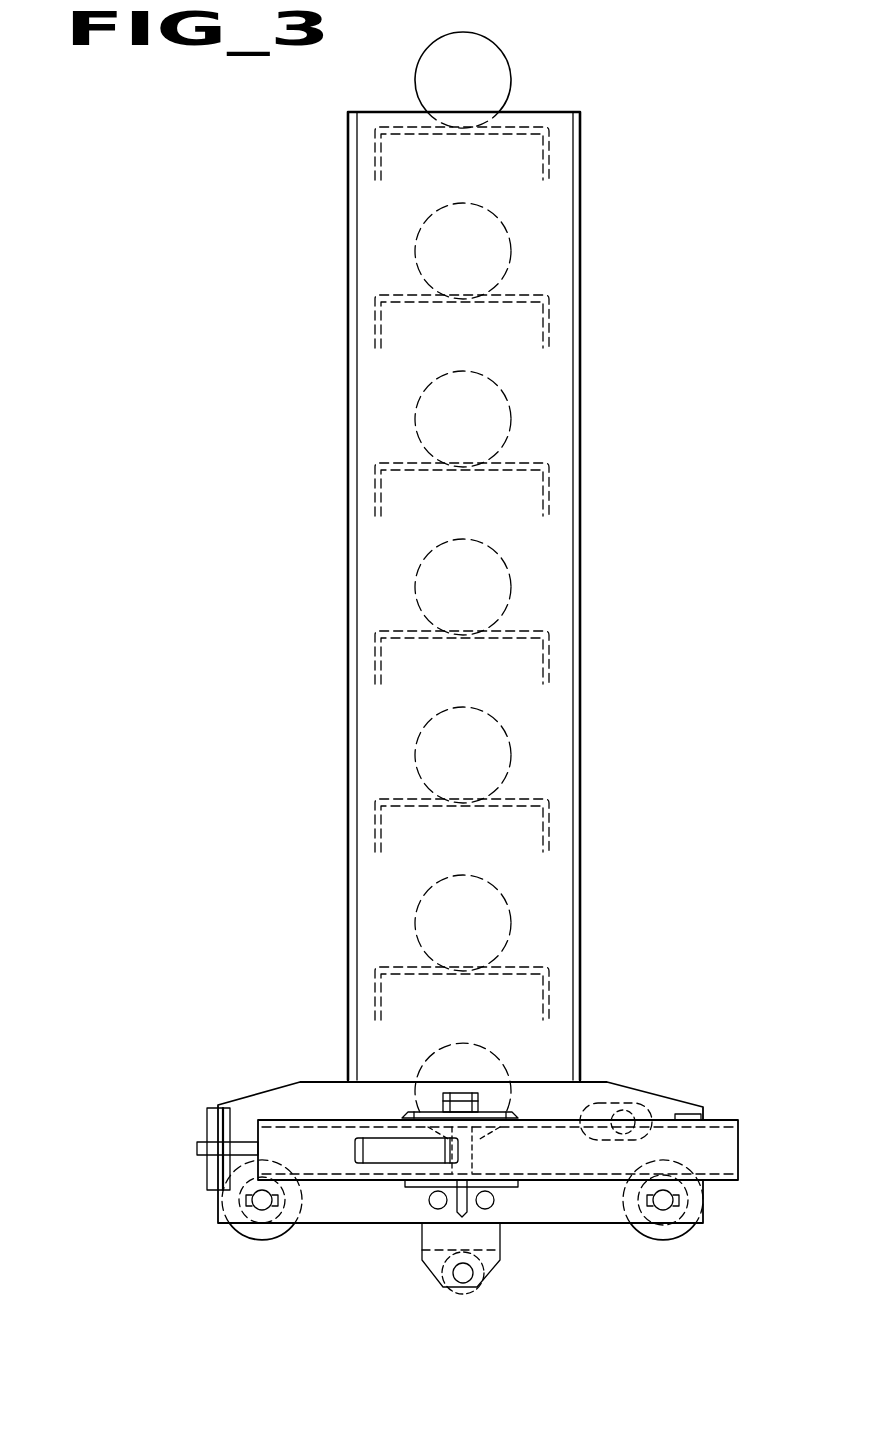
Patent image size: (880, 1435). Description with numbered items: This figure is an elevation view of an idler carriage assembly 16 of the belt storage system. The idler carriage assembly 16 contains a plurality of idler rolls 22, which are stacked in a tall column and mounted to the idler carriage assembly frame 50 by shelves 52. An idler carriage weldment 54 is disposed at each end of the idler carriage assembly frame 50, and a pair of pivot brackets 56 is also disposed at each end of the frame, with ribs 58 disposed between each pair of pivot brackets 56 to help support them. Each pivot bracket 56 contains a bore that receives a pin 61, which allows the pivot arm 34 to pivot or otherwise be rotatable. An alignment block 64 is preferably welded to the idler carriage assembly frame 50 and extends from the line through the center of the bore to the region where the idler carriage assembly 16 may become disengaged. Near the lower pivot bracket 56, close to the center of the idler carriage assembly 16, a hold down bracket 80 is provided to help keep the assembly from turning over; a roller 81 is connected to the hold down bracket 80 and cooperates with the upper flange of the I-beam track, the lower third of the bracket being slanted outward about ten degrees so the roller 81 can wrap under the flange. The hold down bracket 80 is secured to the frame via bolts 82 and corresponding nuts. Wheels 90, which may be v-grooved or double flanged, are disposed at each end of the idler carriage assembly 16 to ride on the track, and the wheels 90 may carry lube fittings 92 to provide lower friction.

The idler carriage assembly 16 is at (652, 414).
The idler rolls 22 is at (505, 62).
The pivot arm 34 is at (738, 1125).
The idler carriage assembly frame 50 is at (557, 1067).
The shelves 52 is at (539, 159).
The idler carriage weldment 54 is at (576, 112).
The pivot brackets 56 is at (405, 1116).
The ribs 58 is at (480, 1155).
The pin 61 is at (452, 1203).
The alignment block 64 is at (355, 1148).
The hold down bracket 80 is at (503, 1273).
The roller 81 is at (465, 1285).
The bolts 82 is at (430, 1206).
The wheels 90 is at (653, 1240).
The lube fittings 92 is at (668, 1210).